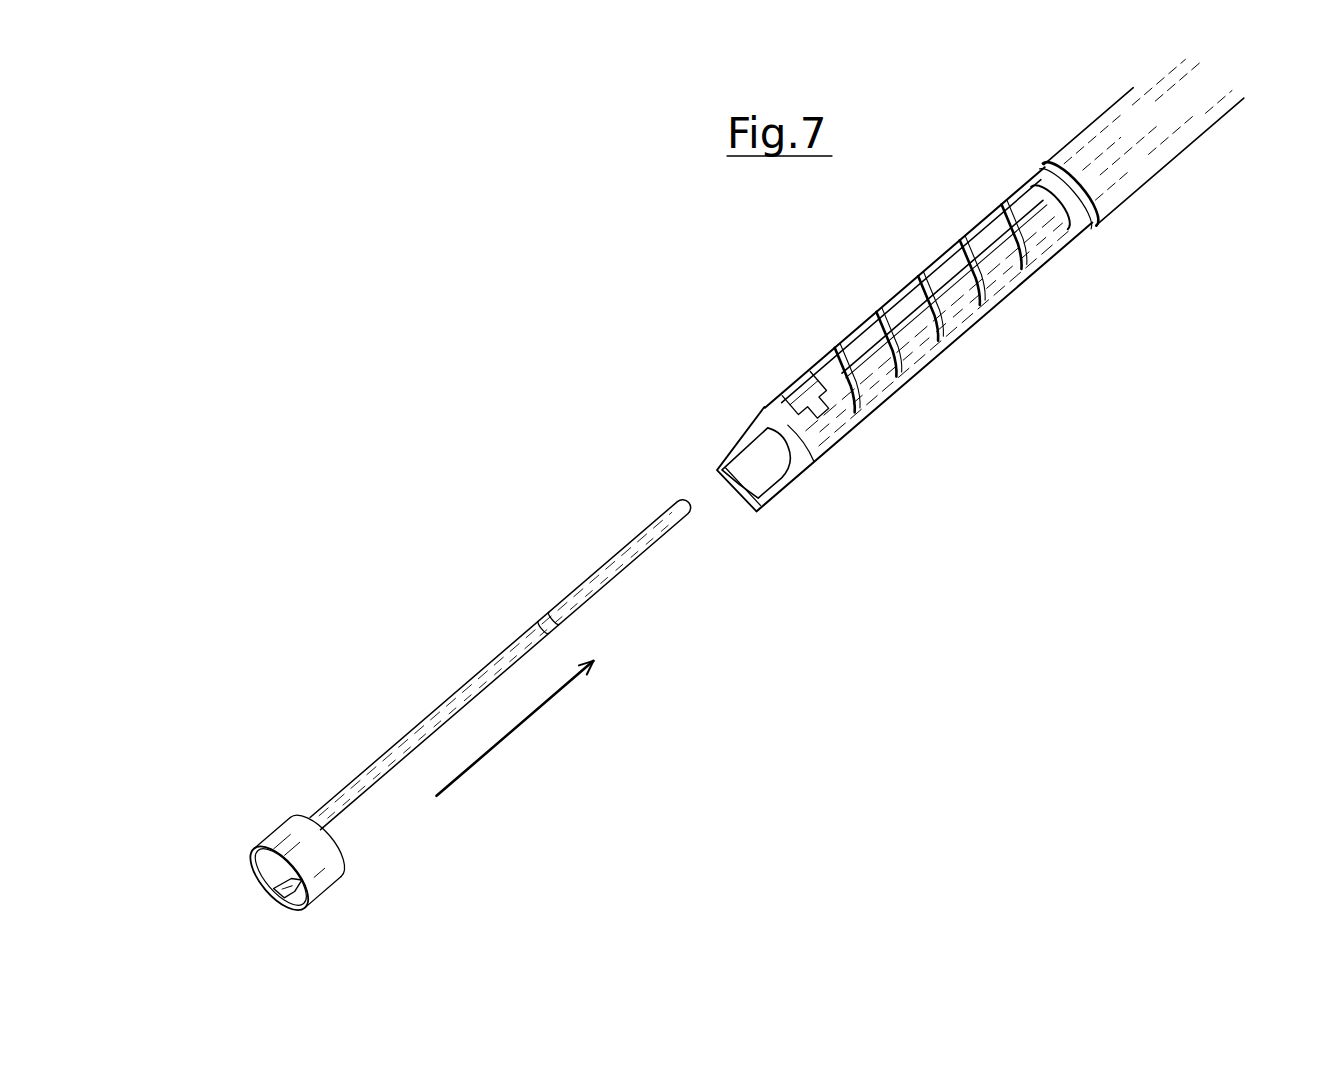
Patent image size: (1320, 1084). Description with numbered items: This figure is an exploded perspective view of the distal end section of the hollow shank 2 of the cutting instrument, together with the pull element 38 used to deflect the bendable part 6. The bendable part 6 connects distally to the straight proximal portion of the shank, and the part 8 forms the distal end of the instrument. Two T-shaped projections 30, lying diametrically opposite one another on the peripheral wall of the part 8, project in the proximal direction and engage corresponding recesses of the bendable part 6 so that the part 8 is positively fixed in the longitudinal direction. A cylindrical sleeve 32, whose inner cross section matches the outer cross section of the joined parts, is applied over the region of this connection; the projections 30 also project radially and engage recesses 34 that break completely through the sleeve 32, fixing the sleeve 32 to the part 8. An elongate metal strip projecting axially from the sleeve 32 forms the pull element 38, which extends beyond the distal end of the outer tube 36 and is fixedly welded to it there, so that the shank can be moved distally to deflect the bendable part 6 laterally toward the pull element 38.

The hollow shank 2 is at (960, 364).
The bendable part 6 is at (927, 282).
The distal part 8 is at (757, 445).
The T-shaped projections 30 is at (803, 376).
The outer tube 36 is at (1128, 178).
The pull element 38 is at (462, 692).
The cylindrical sleeve 32 is at (302, 828).
The recesses 34 is at (282, 878).